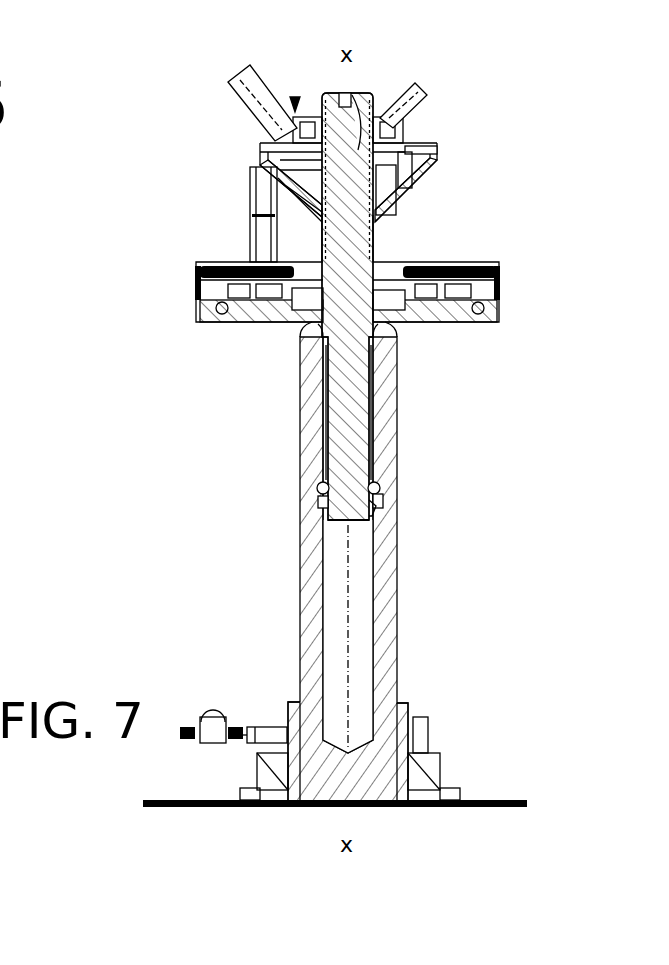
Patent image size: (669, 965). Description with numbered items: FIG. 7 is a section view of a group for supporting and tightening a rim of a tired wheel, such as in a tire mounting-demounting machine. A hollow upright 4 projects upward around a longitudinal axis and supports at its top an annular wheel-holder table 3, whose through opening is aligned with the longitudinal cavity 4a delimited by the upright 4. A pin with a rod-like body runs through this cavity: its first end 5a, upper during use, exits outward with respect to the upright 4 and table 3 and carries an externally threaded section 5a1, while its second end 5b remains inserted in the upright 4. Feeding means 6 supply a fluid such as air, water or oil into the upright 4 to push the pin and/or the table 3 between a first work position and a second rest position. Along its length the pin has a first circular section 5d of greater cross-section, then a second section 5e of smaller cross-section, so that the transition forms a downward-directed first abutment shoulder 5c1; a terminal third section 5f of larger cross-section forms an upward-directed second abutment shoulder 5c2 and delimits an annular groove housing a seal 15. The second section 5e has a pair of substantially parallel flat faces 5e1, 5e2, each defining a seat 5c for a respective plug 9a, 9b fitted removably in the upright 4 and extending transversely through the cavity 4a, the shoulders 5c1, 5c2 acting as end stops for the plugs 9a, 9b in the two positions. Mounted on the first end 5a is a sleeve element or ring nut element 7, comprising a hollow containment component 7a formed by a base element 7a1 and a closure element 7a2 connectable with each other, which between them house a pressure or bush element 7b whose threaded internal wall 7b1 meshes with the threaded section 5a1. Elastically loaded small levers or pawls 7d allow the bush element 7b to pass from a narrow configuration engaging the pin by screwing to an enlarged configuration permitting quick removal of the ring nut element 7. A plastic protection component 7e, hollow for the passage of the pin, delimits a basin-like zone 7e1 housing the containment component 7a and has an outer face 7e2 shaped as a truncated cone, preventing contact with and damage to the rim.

The wheel-holder table 3 is at (496, 313).
The upright 4 is at (398, 627).
The longitudinal cavity 4a is at (370, 584).
The first end 5a is at (298, 137).
The externally threaded section 5a1 is at (380, 240).
The second end 5b is at (343, 520).
The seat 5c is at (367, 415).
The first abutment shoulder 5c1 is at (387, 490).
The second abutment shoulder 5c2 is at (322, 340).
The first section 5d is at (332, 90).
The second section 5e is at (335, 423).
The gap wall 5e1 is at (333, 443).
The gap wall 5e2 is at (373, 450).
The third section 5f is at (325, 503).
The feeding means 6 is at (248, 727).
The sleeve element or ring nut element 7 is at (293, 97).
The hollow containment component 7a is at (300, 173).
The base element 7a1 is at (400, 163).
The closure element 7a2 is at (381, 117).
The pressure or bush element 7b is at (383, 177).
The threaded internal wall 7b1 is at (358, 132).
The small levers or pawls 7d is at (426, 100).
The protection component 7e is at (310, 208).
The basin-like zone 7e1 is at (420, 143).
The outer wall or face 7e2 is at (288, 190).
The plug 9a is at (378, 485).
The plug 9b is at (320, 487).
The seal 15 is at (370, 503).